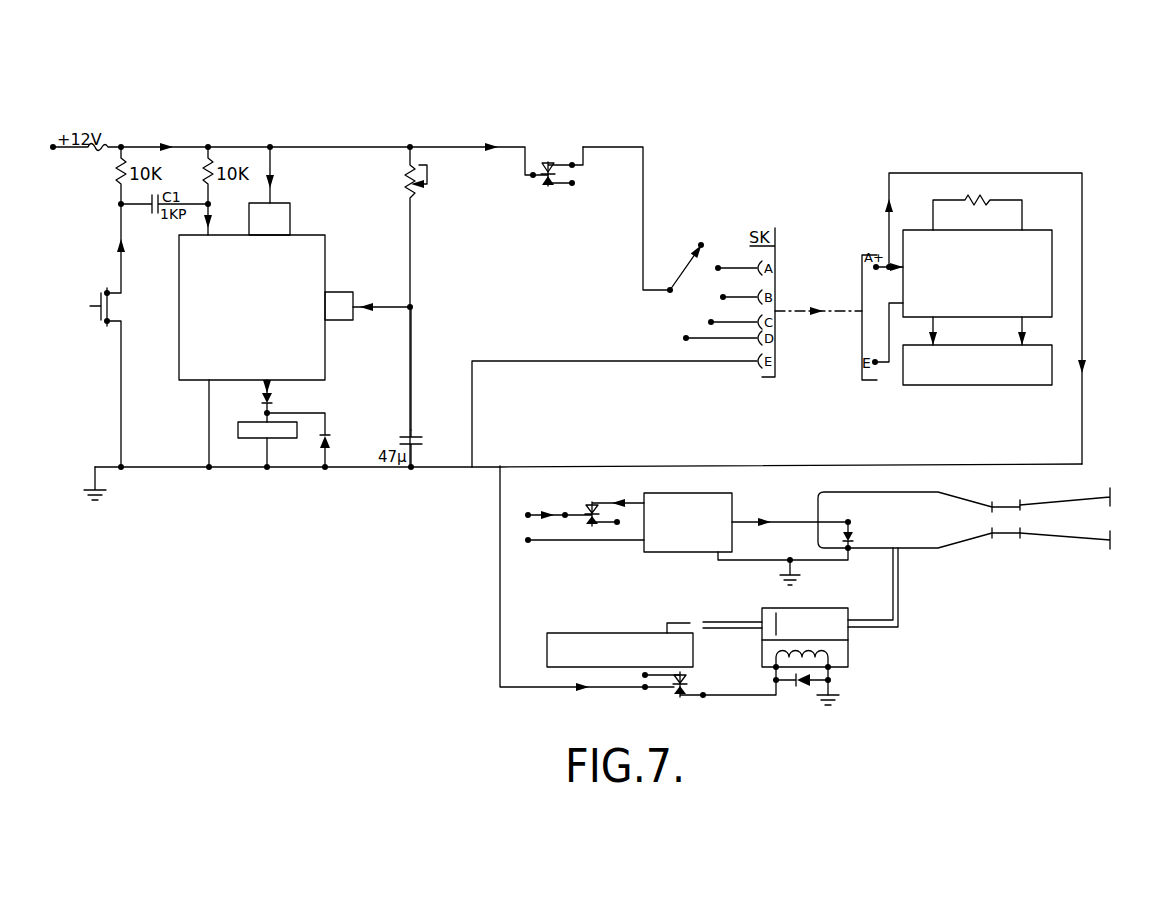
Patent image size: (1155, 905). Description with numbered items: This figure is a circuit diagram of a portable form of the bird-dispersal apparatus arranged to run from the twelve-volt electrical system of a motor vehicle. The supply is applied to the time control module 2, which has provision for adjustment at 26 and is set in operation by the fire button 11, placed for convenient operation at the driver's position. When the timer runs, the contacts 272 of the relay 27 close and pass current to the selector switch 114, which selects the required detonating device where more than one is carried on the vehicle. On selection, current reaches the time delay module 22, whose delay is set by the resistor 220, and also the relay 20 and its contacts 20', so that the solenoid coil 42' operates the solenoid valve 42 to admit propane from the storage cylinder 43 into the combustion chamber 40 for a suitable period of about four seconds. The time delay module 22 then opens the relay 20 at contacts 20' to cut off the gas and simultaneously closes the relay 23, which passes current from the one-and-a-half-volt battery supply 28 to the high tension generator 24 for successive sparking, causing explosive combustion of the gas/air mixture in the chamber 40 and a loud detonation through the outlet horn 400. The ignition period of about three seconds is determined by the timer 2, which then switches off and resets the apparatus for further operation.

The fire button 11 is at (94, 291).
The time control module 2 is at (330, 257).
The adjustment 26 is at (430, 172).
The relay contacts 272 is at (575, 172).
The selector switch 114 is at (660, 303).
The time delay module 22 is at (1030, 257).
The resistor 220 is at (1012, 213).
The relay 20 is at (977, 383).
The relay 27 is at (251, 430).
The relay 23 is at (587, 506).
The high tension generator 24 is at (698, 493).
The 1.5-Volt supply 28 is at (525, 536).
The combustion chamber 40 is at (862, 500).
The outlet opening or horn 400 is at (1055, 537).
The solenoid operated control valve 42 is at (806, 622).
The solenoid coil 42' is at (839, 653).
The storage container or cylinder 43 is at (606, 632).
The relay contacts 20' is at (689, 674).